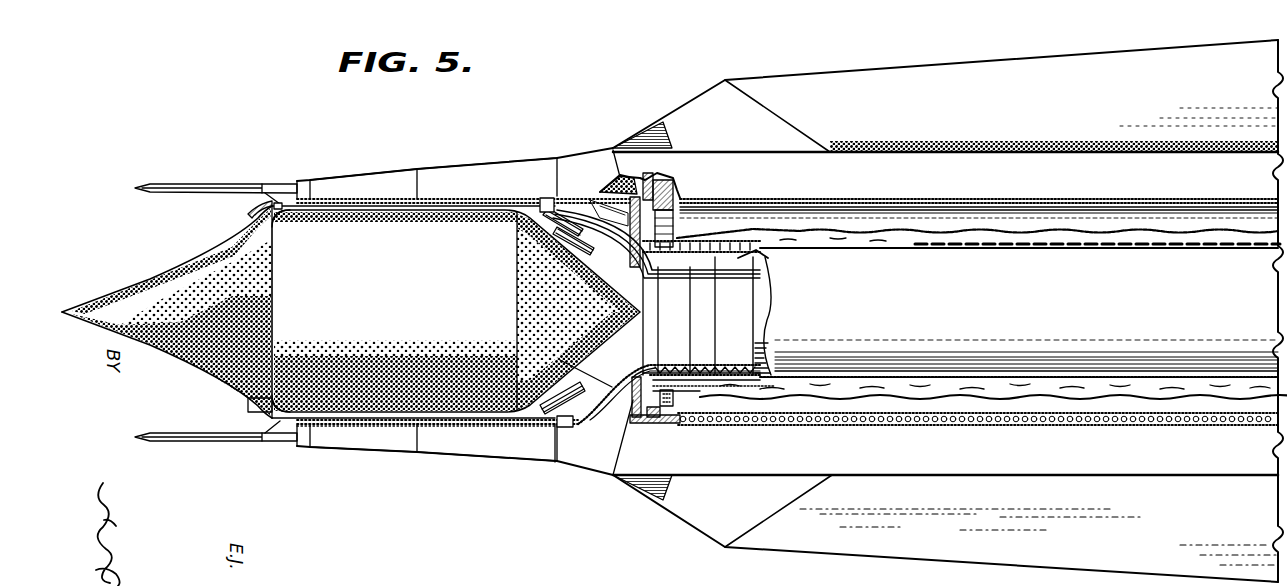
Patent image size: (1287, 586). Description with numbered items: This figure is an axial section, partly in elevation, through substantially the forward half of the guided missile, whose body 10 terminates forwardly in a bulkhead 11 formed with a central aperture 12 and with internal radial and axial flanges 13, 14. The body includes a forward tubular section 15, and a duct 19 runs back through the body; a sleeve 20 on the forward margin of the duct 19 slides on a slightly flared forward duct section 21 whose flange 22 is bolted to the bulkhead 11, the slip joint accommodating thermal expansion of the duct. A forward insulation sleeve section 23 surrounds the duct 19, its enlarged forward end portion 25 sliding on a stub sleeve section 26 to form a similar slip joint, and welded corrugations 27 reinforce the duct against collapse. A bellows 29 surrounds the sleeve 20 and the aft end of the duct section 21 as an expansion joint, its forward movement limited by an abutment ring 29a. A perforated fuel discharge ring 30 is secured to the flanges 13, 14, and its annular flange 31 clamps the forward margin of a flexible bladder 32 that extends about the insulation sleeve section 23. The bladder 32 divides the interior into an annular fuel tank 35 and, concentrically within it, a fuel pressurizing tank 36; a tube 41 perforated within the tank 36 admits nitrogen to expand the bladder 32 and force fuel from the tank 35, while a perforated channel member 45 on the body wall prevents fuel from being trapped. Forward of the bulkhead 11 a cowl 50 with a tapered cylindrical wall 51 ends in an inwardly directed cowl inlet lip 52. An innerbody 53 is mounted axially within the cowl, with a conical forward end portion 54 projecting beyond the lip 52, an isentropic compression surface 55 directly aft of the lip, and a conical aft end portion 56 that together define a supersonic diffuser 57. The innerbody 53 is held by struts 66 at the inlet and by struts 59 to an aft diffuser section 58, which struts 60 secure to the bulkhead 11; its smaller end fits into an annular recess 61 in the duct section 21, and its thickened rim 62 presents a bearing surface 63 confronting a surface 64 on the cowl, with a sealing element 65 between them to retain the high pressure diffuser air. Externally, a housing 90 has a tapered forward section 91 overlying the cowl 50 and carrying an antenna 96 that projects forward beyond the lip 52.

The body 10 is at (1017, 192).
The bulkhead 11 is at (620, 178).
The central aperture 12 is at (641, 266).
The internal radial flange 13 is at (672, 194).
The internal axial flange 14 is at (648, 186).
The forward tubular section 15 is at (820, 198).
The duct 19 is at (765, 297).
The sleeve 20 is at (698, 363).
The forward duct section 21 is at (687, 363).
The flange 22 is at (623, 246).
The forward insulation sleeve section 23 is at (977, 352).
The enlarged forward end portion 25 is at (727, 386).
The stub sleeve section 26 is at (688, 382).
The corrugations 27 is at (770, 262).
The bellows 29 is at (717, 363).
The abutment ring 29a is at (657, 362).
The perforated fuel discharge ring 30 is at (690, 207).
The annular flange 31 is at (675, 399).
The flexible bladder 32 is at (900, 230).
The annular fuel tank 35 is at (880, 216).
The fuel pressurizing tank 36 is at (847, 240).
The tube 41 is at (1000, 248).
The perforated channel member 45 is at (848, 421).
The cowl 50 is at (400, 192).
The cylindrical wall 51 is at (348, 199).
The cowl inlet lip 52 is at (250, 215).
The innerbody 53 is at (353, 378).
The conical forward end portion 54 is at (123, 290).
The isentropic compression surface 55 is at (248, 404).
The conical aft end portion 56 is at (598, 345).
The supersonic diffuser 57 is at (373, 421).
The aft diffuser section 58 is at (585, 250).
The struts 59 is at (572, 232).
The struts 60 is at (601, 191).
The annular recess 61 is at (632, 258).
The thickened rim 62 is at (590, 203).
The flat annular bearing surface 63 is at (553, 197).
The bearing surface 64 is at (543, 425).
The sealing element 65 is at (572, 428).
The struts 66 is at (278, 213).
The housing 90 is at (425, 470).
The tapered forward section 91 is at (392, 455).
The antenna 96 is at (182, 182).